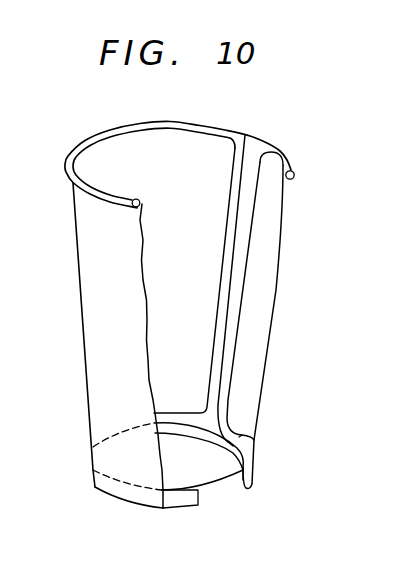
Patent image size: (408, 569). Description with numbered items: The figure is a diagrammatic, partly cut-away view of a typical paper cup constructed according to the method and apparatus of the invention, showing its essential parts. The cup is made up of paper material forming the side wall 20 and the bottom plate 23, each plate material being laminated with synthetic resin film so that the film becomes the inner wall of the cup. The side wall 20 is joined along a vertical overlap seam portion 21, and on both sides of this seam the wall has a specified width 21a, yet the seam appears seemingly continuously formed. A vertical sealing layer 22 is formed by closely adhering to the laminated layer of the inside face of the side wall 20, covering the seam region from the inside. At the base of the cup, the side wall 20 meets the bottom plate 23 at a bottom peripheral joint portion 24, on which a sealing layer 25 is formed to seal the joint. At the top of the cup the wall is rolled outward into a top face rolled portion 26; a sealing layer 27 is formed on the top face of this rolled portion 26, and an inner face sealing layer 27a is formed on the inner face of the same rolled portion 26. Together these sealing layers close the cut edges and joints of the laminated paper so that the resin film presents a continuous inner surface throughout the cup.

The side wall 20 is at (268, 262).
The vertical overlap seam portion 21 is at (237, 231).
The specified width 21a is at (211, 193).
The vertical sealing layer 22 is at (222, 320).
The bottom plate 23 is at (210, 478).
The bottom peripheral joint portion 24 is at (251, 448).
The sealing layer 25 is at (232, 430).
The top face rolled portion 26 is at (248, 131).
The sealing layer 27 is at (210, 126).
The inner face sealing layer 27a is at (114, 199).